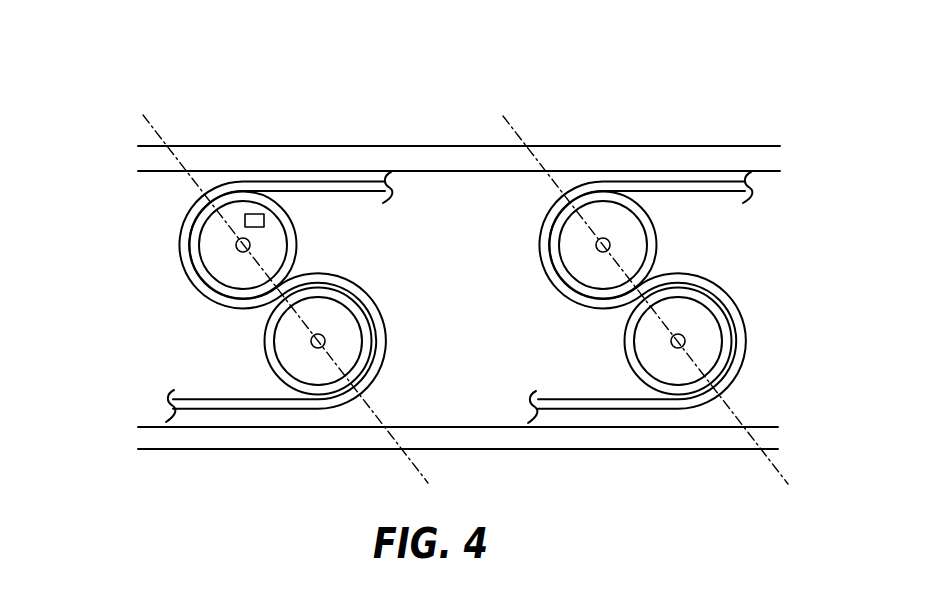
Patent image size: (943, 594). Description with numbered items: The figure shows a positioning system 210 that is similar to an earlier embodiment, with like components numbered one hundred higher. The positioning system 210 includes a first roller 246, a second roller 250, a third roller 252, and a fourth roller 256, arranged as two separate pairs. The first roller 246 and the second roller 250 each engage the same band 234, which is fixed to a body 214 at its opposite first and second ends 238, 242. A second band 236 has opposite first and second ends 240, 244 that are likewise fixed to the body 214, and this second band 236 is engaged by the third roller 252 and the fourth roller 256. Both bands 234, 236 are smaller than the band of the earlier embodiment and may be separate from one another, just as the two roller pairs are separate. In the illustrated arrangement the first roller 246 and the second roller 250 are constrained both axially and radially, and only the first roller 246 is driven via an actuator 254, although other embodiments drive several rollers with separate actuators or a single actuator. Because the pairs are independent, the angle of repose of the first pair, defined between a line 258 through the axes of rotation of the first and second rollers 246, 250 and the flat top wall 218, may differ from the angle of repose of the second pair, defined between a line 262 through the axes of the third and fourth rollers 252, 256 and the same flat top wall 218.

The positioning system 210 is at (93, 103).
The body 214 is at (397, 145).
The flat top wall 218 is at (463, 157).
The first end 238 is at (368, 182).
The first end 240 is at (732, 185).
The second end 242 is at (167, 407).
The second end 244 is at (540, 410).
The first roller 246 is at (302, 253).
The third roller 252 is at (660, 255).
The band 234 is at (375, 373).
The second band 236 is at (738, 302).
The second roller 250 is at (268, 370).
The fourth roller 256 is at (628, 370).
The actuator 254 is at (245, 218).
The line 258 is at (199, 183).
The line 262 is at (520, 137).